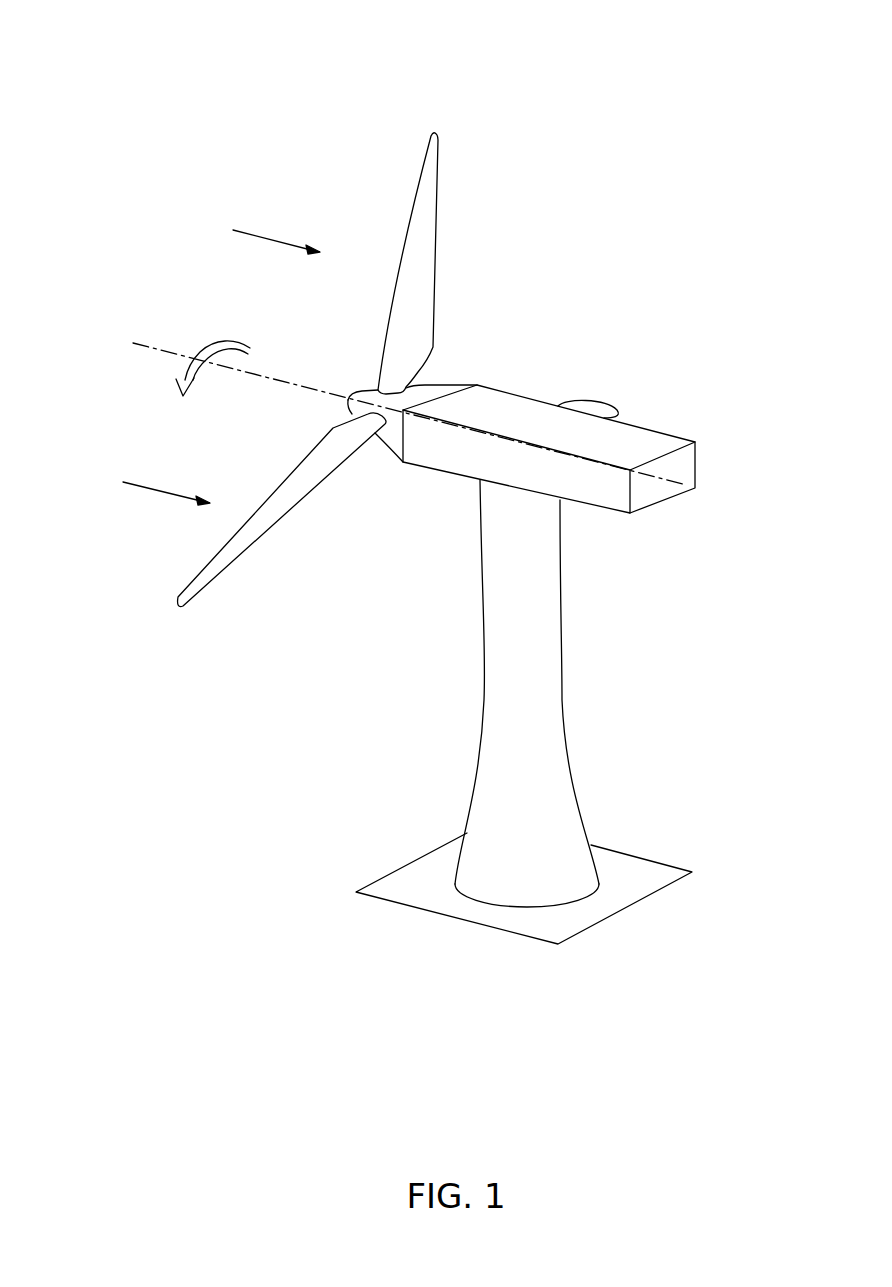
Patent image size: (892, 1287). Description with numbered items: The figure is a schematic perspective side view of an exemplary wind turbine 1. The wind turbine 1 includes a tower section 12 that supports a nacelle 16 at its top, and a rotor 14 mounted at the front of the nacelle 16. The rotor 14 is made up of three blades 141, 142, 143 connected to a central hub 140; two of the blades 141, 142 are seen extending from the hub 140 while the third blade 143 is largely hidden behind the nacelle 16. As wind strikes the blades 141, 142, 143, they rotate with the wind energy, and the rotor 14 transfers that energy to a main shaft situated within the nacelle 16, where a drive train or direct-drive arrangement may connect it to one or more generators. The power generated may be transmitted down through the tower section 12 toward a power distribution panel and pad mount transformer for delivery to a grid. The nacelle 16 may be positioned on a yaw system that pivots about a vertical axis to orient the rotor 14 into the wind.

The wind turbine 1 is at (220, 85).
The tower section 12 is at (545, 700).
The rotor 14 is at (443, 363).
The nacelle 16 is at (653, 445).
The hub 140 is at (373, 398).
The blade 141 is at (412, 243).
The blade 142 is at (217, 583).
The blade 143 is at (598, 410).